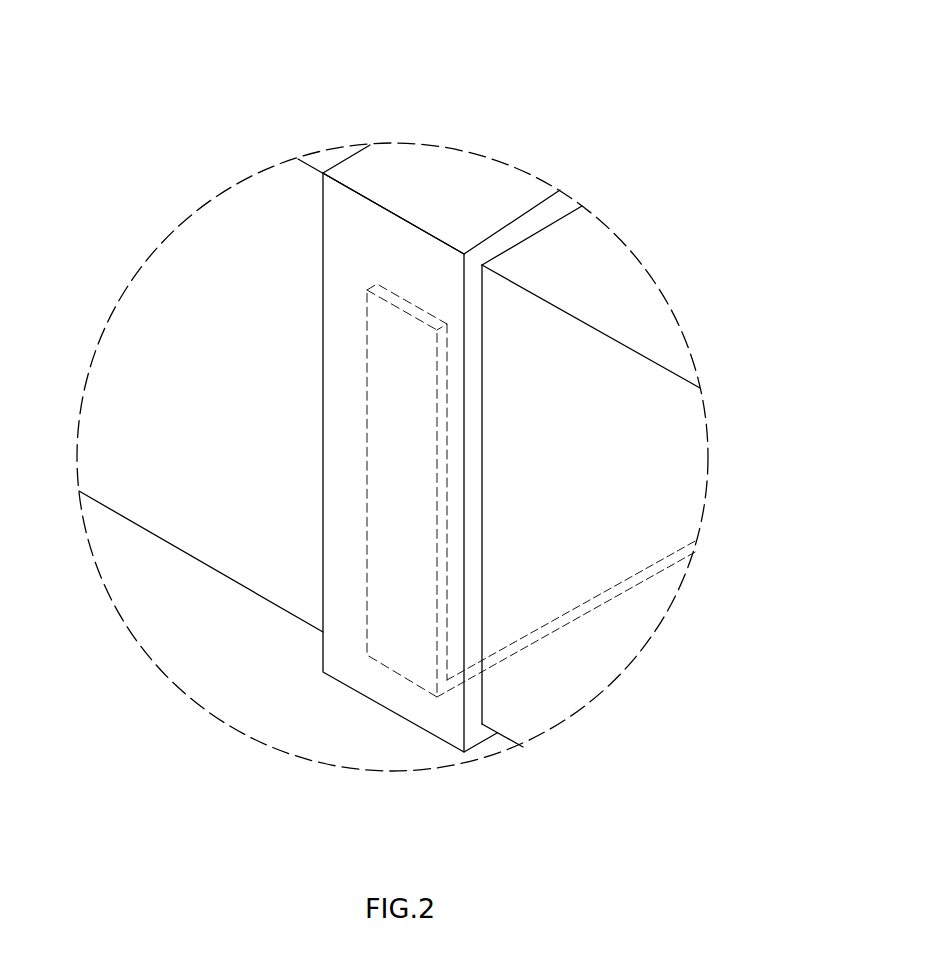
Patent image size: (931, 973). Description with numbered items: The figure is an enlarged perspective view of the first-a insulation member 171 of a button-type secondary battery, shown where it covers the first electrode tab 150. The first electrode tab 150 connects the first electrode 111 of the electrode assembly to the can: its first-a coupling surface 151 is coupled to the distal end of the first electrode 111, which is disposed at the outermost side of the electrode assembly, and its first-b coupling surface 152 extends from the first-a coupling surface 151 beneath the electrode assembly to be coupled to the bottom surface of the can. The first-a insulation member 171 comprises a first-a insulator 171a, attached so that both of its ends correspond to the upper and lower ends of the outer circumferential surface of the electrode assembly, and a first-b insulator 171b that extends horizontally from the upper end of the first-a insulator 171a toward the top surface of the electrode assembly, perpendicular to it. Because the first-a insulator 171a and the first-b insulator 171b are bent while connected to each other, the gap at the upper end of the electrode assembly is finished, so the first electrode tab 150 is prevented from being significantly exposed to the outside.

The first electrode 111 is at (227, 247).
The first-a insulation member 171 is at (452, 386).
The first-a insulator 171a is at (367, 238).
The first-b insulator 171b is at (443, 183).
The first electrode tab 150 is at (583, 502).
The first-a coupling surface 151 is at (437, 580).
The first-b coupling surface 152 is at (508, 658).